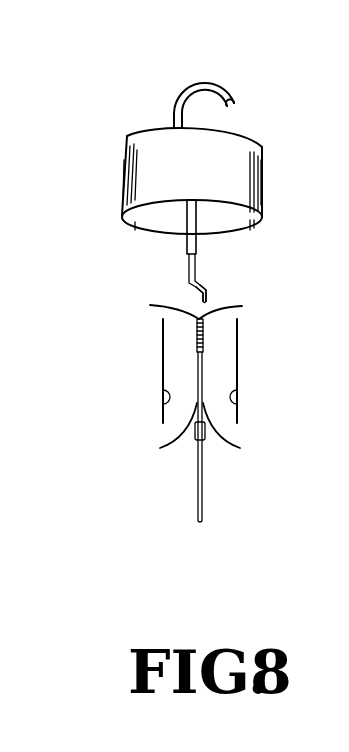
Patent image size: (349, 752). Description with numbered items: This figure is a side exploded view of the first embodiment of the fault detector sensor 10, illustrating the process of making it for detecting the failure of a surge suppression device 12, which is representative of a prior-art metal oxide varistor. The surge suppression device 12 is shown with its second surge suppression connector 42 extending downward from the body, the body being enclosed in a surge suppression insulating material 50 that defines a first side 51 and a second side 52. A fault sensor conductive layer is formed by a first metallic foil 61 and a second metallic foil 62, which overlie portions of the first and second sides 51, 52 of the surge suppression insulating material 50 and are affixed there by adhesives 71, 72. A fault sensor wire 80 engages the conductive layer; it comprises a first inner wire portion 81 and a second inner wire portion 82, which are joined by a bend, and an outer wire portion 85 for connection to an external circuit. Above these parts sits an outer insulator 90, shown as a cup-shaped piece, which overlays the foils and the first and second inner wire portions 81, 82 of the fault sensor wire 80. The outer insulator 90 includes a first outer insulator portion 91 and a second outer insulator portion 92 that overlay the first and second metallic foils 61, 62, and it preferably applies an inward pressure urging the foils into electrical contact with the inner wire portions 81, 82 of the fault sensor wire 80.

The fault detector sensor 10 is at (65, 240).
The surge suppression device 12 is at (241, 306).
The second surge suppression connector 42 is at (203, 494).
The surge suppression insulating material 50 is at (151, 305).
The first side of surge suppression insulating material 51 is at (166, 444).
The second side of surge suppression insulating material 52 is at (234, 443).
The first metallic foil 61 is at (162, 365).
The second metallic foil 62 is at (238, 365).
The adhesive 71 is at (163, 399).
The adhesive 72 is at (237, 399).
The fault sensor wire 80 is at (189, 94).
The first inner wire portion 81 is at (190, 275).
The second inner wire portion 82 is at (211, 291).
The outer wire portion 85 is at (238, 99).
The outer insulator 90 is at (128, 168).
The first outer insulator portion 91 is at (128, 190).
The second outer insulator portion 92 is at (260, 182).